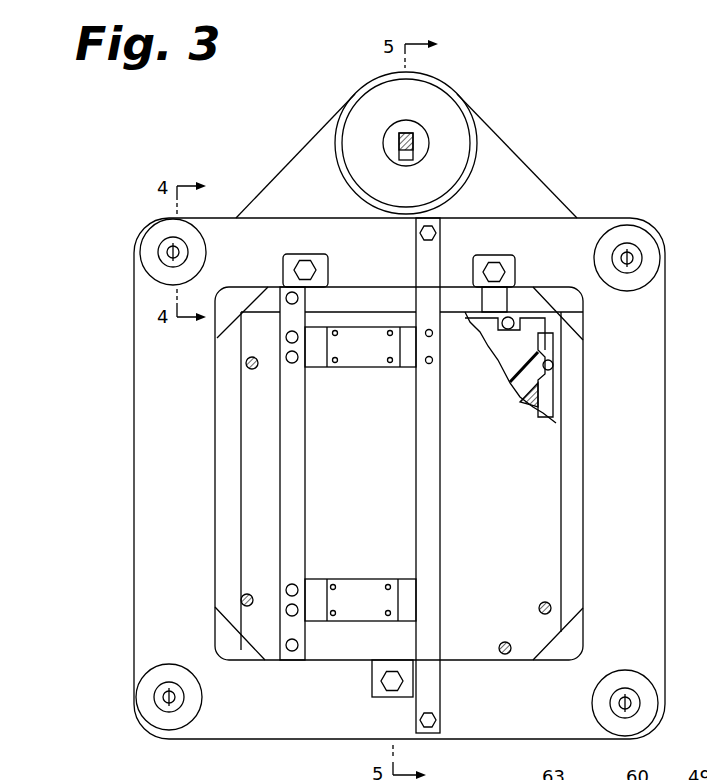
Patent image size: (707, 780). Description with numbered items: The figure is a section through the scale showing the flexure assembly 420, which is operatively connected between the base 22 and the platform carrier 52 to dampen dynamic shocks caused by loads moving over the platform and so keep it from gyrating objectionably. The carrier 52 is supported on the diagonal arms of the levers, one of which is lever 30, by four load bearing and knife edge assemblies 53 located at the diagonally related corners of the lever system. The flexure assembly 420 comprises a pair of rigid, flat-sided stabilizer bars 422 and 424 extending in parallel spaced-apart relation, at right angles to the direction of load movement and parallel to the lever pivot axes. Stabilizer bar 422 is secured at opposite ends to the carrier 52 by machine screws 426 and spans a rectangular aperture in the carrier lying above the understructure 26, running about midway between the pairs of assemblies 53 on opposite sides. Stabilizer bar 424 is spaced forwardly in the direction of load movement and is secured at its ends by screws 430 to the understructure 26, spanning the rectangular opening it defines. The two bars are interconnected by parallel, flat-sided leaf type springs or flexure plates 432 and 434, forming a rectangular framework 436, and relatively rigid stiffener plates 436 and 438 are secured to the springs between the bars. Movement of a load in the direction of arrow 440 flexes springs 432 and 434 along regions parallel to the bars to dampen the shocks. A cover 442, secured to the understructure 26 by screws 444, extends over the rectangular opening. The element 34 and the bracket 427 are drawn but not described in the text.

The base 22 is at (524, 164).
The understructure 26 is at (556, 423).
The lever 30 is at (520, 390).
The key 34 is at (404, 160).
The platform carrier 52 is at (600, 226).
The load bearing and knife edge assemblies 53 is at (165, 242).
The flexure assembly 420 is at (439, 475).
The stabilizer bar 422 is at (441, 466).
The stabilizer bar 424 is at (303, 450).
The machine screws 426 is at (438, 234).
The bracket 427 is at (526, 290).
The screws 430 is at (299, 298).
The flexure plate 432 is at (316, 368).
The flexure plate 434 is at (312, 577).
The rectangular framework 436 is at (370, 370).
The spring stiffener plate 438 is at (362, 578).
The arrow 440 is at (358, 469).
The cover 442 is at (487, 387).
The screws 444 is at (250, 369).